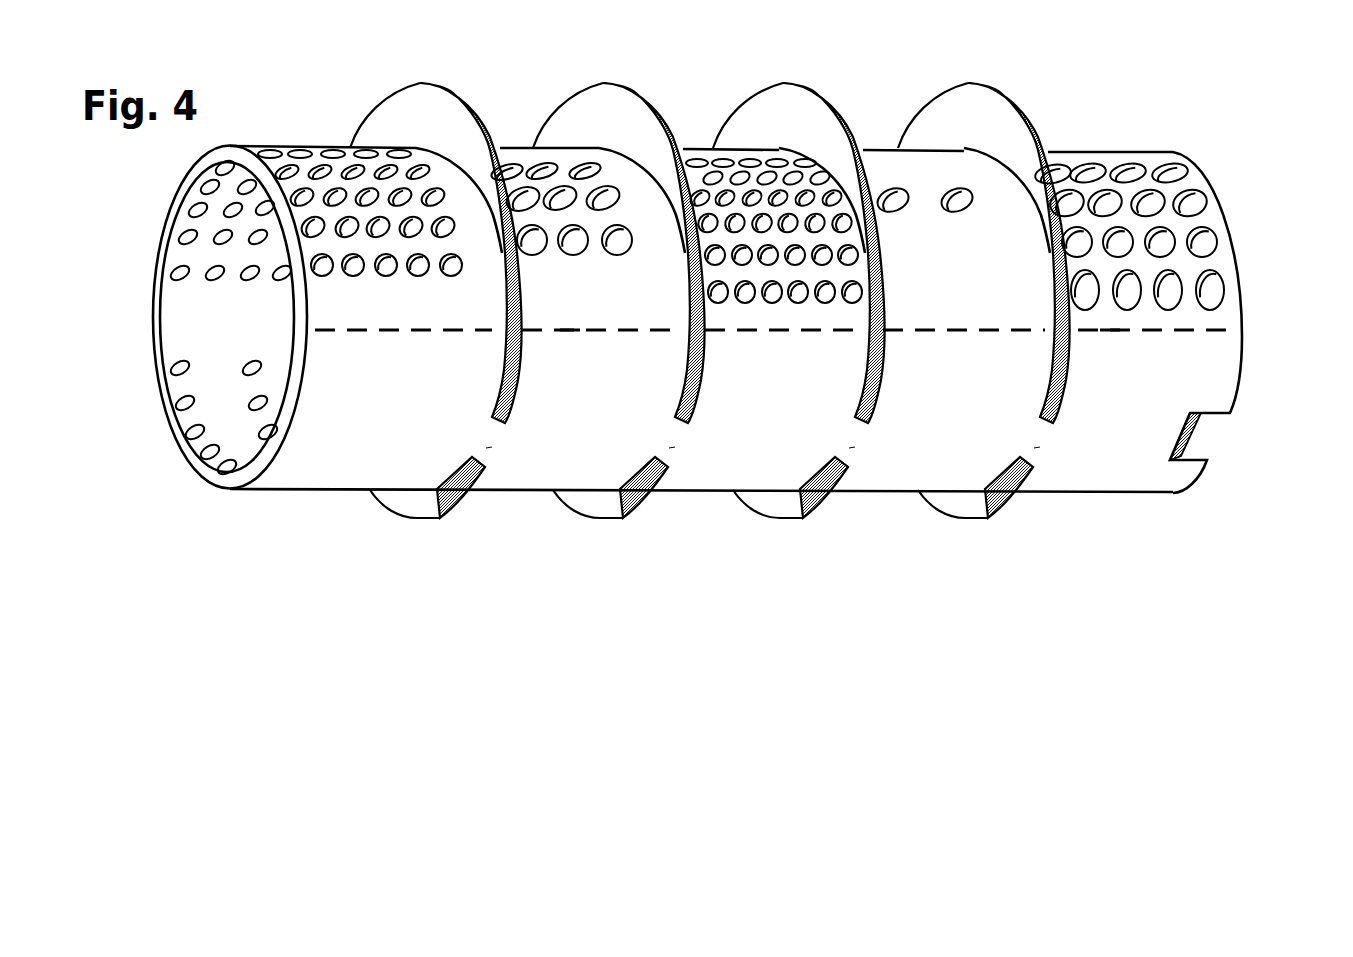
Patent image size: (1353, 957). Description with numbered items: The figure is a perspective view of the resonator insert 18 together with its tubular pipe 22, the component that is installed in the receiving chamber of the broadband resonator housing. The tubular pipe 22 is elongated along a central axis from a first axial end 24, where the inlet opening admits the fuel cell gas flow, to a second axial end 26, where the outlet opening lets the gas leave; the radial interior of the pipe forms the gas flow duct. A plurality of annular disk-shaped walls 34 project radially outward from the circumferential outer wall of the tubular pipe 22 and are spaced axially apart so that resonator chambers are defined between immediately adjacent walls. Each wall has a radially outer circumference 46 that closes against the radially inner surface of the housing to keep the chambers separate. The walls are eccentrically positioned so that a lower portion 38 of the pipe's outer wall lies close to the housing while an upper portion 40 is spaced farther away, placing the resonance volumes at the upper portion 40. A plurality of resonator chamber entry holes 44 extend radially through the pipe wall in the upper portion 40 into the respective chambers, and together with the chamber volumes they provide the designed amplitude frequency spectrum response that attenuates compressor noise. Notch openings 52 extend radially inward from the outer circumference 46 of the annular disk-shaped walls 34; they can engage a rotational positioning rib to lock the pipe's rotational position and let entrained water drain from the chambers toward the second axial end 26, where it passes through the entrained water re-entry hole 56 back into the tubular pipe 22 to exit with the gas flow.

The resonator insert 18 is at (888, 50).
The tubular pipe 22 is at (266, 530).
The first axial end 24 is at (116, 320).
The second axial end 26 is at (1284, 355).
The annular disk-shaped wall 34 is at (428, 132).
The lower portion 38 is at (861, 347).
The upper portion 40 is at (773, 316).
The resonator chamber entry hole 44 is at (347, 165).
The radially outer circumference 46 is at (432, 83).
The notch opening 52 is at (493, 448).
The entrained water re-entry hole 56 is at (1213, 443).